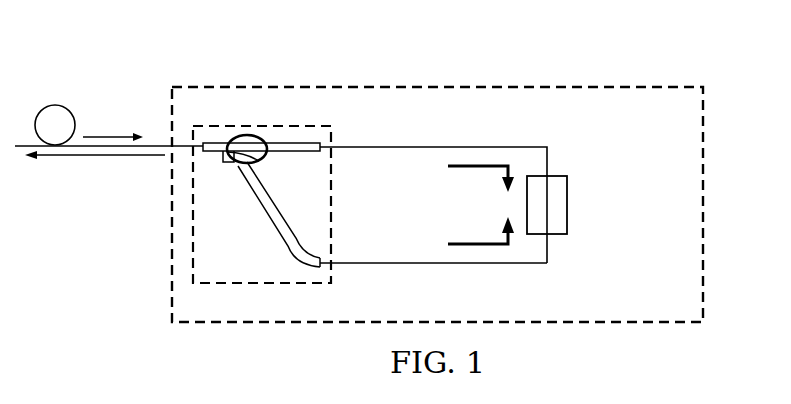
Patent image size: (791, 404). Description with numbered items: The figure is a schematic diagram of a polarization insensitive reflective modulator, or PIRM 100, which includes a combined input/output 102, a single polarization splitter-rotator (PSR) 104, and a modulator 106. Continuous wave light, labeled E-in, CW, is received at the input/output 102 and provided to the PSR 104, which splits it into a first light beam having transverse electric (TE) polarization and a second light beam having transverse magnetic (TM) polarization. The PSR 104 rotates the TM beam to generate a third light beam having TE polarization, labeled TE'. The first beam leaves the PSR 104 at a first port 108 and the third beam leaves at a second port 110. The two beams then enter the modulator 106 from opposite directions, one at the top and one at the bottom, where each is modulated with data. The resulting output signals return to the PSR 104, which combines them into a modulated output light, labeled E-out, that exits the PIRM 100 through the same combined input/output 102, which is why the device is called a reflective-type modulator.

The polarization insensitive reflective modulator (PIRM) 100 is at (224, 56).
The combined input/output 102 is at (169, 142).
The polarization splitter-rotator (PSR) 104 is at (340, 200).
The modulator 106 is at (556, 176).
The first port 108 is at (334, 143).
The second port 110 is at (334, 268).